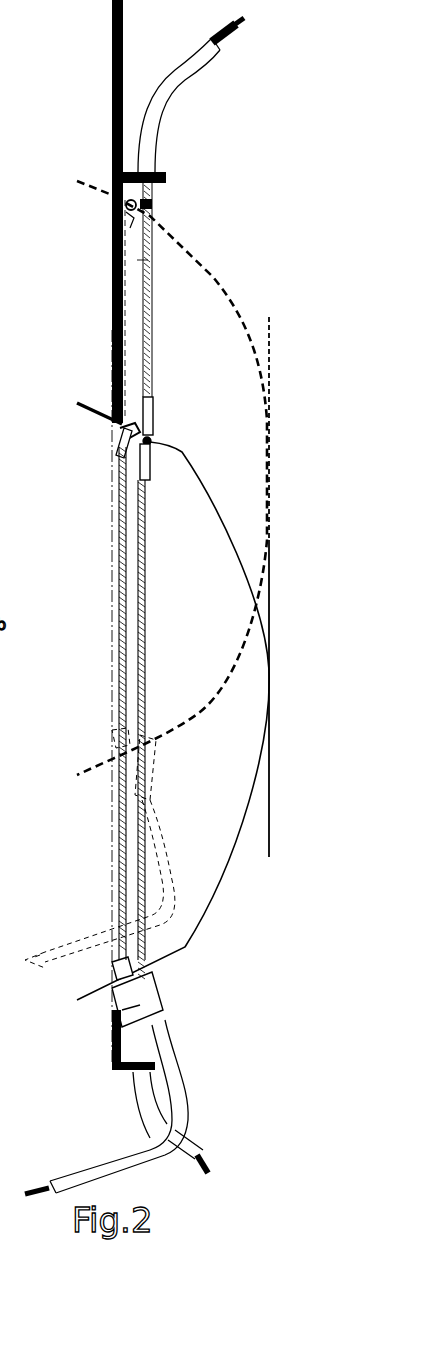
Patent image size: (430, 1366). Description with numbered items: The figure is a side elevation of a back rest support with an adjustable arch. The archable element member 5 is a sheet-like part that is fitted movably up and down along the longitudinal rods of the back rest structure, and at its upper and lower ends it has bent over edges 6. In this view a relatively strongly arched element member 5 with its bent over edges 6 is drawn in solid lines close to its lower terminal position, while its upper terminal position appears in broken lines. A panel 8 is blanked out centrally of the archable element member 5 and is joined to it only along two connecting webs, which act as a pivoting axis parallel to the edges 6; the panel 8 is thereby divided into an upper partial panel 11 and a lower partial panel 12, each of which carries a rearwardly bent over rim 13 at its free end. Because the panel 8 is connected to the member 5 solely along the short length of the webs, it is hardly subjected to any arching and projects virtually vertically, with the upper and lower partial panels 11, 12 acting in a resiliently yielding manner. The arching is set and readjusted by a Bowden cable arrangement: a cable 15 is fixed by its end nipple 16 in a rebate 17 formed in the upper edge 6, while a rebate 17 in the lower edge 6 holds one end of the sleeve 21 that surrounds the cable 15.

The archable element member 5 is at (197, 488).
The bent over edges 6 is at (165, 447).
The panel 8 is at (268, 597).
The upper partial panel 11 is at (268, 578).
The lower partial panel 12 is at (268, 836).
The bent over rim 13 is at (265, 862).
The cable 15 is at (119, 530).
The nipple 16 is at (128, 428).
The rebate 17 is at (137, 425).
The sleeve 21 is at (112, 1022).